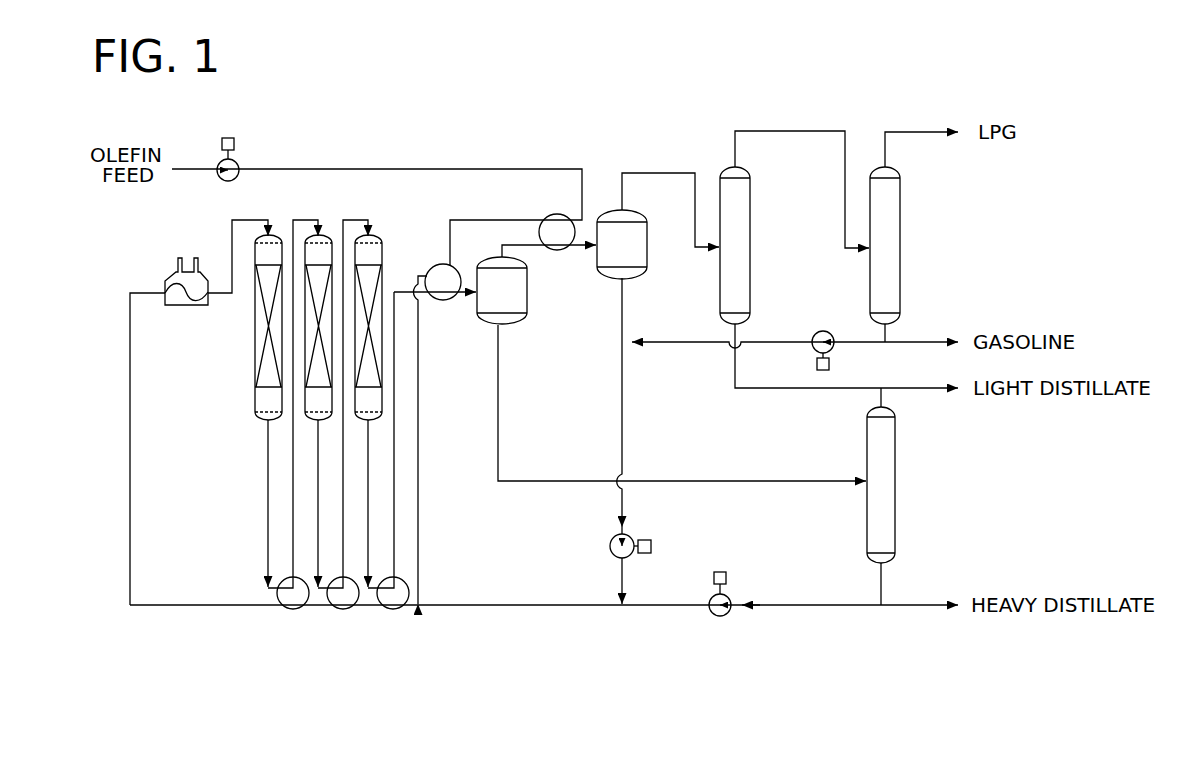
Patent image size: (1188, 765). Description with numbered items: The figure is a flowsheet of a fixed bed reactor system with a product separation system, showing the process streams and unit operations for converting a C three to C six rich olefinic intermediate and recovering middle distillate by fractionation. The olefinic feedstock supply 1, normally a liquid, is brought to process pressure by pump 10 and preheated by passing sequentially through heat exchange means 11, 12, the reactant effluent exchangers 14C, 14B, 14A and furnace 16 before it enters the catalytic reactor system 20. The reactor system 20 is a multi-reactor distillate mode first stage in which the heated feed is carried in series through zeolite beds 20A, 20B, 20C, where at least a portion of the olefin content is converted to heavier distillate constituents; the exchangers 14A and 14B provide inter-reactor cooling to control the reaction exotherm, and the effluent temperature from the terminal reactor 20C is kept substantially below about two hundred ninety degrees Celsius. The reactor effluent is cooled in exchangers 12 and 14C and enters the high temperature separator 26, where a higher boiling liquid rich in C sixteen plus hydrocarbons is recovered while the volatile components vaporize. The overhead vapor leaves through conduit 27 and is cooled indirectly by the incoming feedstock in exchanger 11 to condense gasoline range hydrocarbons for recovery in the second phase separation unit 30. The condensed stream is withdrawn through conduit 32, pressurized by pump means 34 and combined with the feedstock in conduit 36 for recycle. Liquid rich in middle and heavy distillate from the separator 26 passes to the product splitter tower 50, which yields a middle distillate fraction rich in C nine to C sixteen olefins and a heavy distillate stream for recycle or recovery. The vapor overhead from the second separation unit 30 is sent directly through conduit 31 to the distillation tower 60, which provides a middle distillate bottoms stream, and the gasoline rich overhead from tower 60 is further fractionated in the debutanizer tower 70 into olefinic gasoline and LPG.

The olefinic feedstock supply 1 is at (207, 168).
The pump 10 is at (239, 162).
The heat exchange means 11 is at (553, 216).
The heat exchange means 12 is at (441, 267).
The reactant effluent exchanger 14A is at (291, 612).
The reactant effluent exchanger 14B is at (347, 611).
The reactant effluent exchanger 14C is at (388, 611).
The furnace 16 is at (175, 306).
The catalytic reactor system 20 is at (366, 234).
The zeolite bed 20A is at (252, 430).
The zeolite bed 20B is at (302, 430).
The terminal reactor 20C is at (352, 430).
The high temperature separator 26 is at (528, 300).
The conduit 27 is at (531, 248).
The second phase separation unit 30 is at (649, 252).
The conduit 31 is at (650, 173).
The conduit 32 is at (620, 305).
The pump means 34 is at (608, 546).
The conduit 36 is at (540, 607).
The product splitter tower 50 is at (897, 527).
The distillation tower 60 is at (752, 283).
The debutanizer tower 70 is at (900, 283).